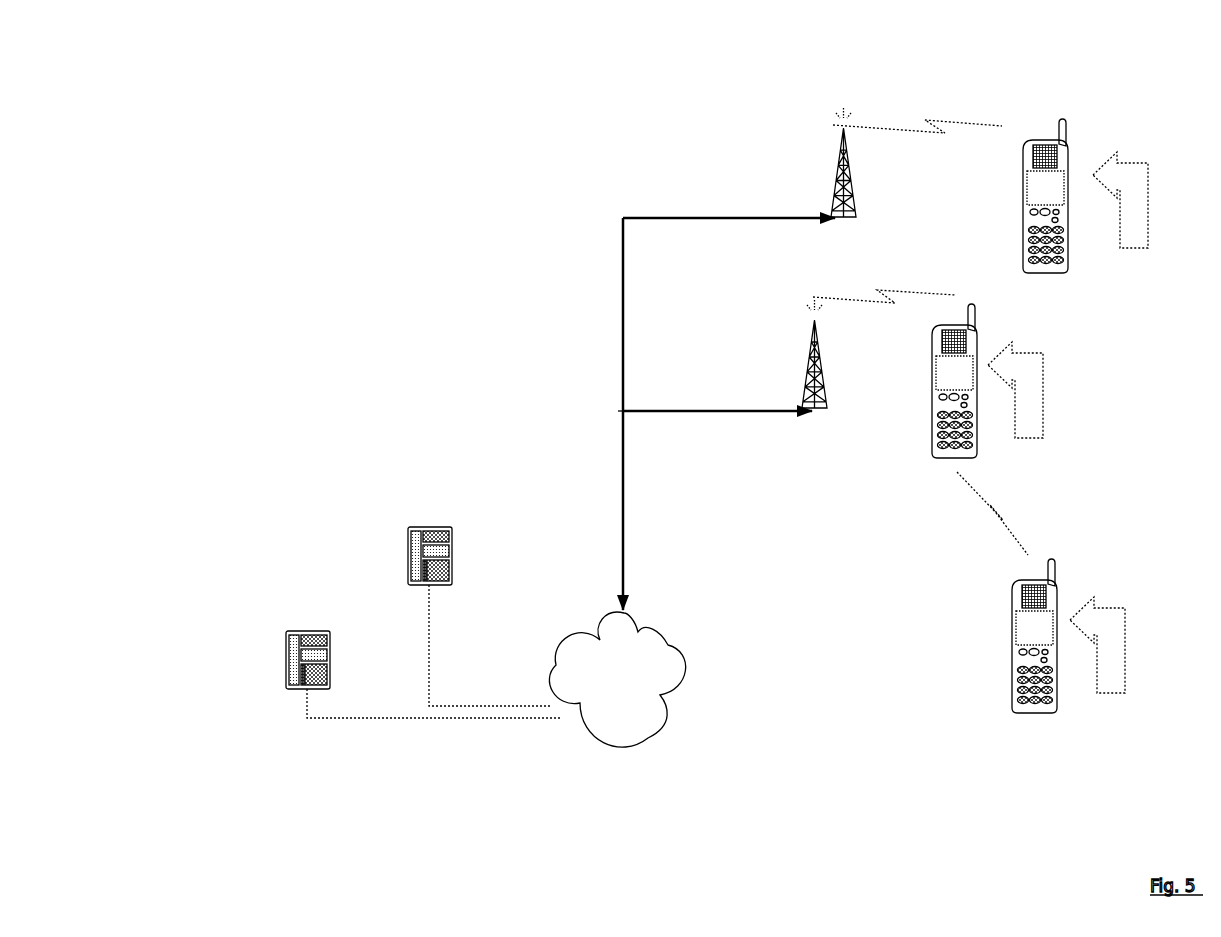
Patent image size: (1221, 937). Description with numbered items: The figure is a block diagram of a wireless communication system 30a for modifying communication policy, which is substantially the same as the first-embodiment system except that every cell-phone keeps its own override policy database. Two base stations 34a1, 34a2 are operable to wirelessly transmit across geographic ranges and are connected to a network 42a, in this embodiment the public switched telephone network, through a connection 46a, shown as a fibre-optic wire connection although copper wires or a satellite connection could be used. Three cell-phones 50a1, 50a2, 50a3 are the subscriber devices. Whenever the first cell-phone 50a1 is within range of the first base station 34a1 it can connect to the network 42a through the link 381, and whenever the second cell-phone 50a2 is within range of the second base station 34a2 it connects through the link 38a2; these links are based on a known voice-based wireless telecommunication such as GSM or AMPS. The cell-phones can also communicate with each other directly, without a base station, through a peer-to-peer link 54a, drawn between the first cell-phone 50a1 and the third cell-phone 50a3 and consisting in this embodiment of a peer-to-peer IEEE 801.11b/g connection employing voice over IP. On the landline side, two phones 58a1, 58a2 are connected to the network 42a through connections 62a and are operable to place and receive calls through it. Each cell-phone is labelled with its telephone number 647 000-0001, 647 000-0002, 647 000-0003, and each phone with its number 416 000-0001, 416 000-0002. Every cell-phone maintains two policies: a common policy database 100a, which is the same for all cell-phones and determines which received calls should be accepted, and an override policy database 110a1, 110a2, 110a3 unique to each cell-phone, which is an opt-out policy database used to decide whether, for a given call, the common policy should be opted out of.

The wireless communication system 30a is at (462, 158).
The base station 34a1 is at (796, 365).
The base station 34a2 is at (822, 175).
The link 38a2 is at (895, 120).
The link 381 is at (882, 282).
The network 42a is at (617, 679).
The connection 46a is at (610, 432).
The cell-phone 50a1 is at (998, 318).
The cell-phone 50a2 is at (1089, 136).
The cell-phone 50a3 is at (1078, 570).
The peer-to-peer link 54a is at (970, 528).
The phone 58a1 is at (311, 620).
The phone 58a2 is at (416, 513).
The connection 62a is at (418, 651).
The common policy database 100a is at (1080, 441).
The override policy database 110a1 is at (1042, 495).
The override policy database 110a2 is at (1143, 306).
The override policy database 110a3 is at (1125, 752).
The first mobile telephone number 647 000-0001 is at (920, 422).
The second mobile telephone number 647 000-0002 is at (1040, 130).
The third mobile telephone number 647 000-0003 is at (993, 656).
The first landline telephone number 416 000-0001 is at (277, 666).
The second landline telephone number 416 000-0002 is at (476, 553).